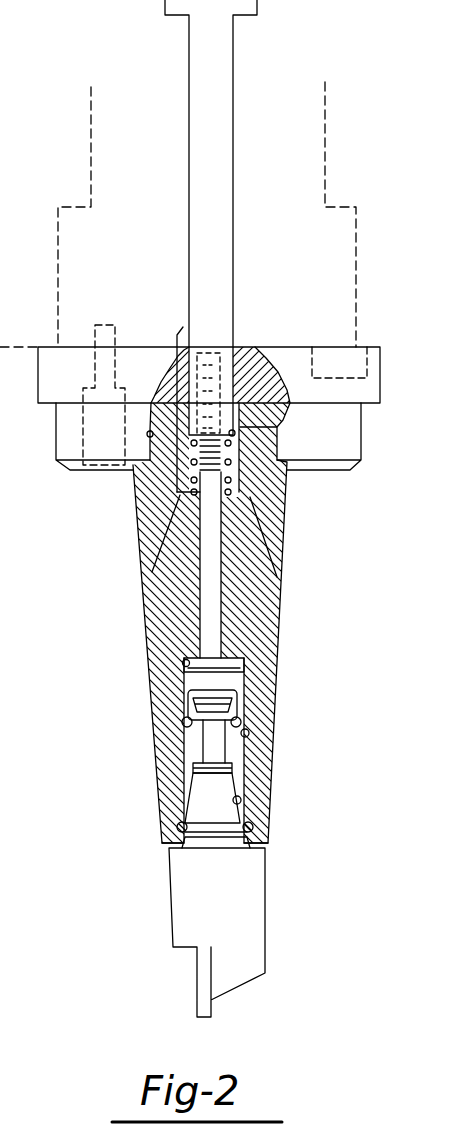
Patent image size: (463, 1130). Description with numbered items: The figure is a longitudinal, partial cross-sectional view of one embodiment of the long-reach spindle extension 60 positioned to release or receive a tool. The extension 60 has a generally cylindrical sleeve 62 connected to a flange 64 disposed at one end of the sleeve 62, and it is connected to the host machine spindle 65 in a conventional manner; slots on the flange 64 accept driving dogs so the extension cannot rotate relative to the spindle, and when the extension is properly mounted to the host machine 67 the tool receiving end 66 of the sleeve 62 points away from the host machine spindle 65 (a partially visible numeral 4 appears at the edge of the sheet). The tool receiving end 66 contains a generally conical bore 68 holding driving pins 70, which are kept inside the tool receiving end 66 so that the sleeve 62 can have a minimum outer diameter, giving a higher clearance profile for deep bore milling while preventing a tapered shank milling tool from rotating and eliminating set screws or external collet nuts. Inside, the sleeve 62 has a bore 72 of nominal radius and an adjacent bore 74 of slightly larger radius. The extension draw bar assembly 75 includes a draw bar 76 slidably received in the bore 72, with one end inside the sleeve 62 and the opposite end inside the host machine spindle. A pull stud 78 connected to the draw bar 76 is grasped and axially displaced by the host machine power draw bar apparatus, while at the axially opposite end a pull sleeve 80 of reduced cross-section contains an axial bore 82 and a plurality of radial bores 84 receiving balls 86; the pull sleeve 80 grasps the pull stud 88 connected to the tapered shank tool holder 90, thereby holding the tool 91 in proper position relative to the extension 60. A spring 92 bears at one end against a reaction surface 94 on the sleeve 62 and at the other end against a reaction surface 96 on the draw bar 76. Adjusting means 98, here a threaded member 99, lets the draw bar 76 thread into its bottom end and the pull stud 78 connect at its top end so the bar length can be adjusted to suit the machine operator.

The mounting plate centerline 4 is at (19, 328).
The long-reach spindle extension 60 is at (112, 668).
The sleeve 62 is at (278, 581).
The flange 64 is at (383, 376).
The host machine spindle 65 is at (290, 124).
The tool receiving end 66 is at (280, 860).
The host machine 67 is at (30, 352).
The conical bore 68 is at (242, 800).
The driving pins 70 is at (250, 830).
The bore 72 is at (238, 660).
The adjacent bore 74 is at (248, 736).
The extension draw bar assembly 75 is at (188, 616).
The draw bar 76 is at (213, 612).
The pull stud 78 is at (233, 52).
The pull sleeve 80 is at (230, 680).
The axial bore 82 is at (183, 665).
The radial bores 84 is at (184, 724).
The balls 86 is at (213, 755).
The pull stud 88 is at (197, 757).
The tapered shank tool holder 90 is at (232, 811).
The tool 91 is at (185, 862).
The spring 92 is at (230, 494).
The reaction surface 94 is at (163, 503).
The reaction surface 96 is at (232, 433).
The adjusting means 98 is at (150, 434).
The threaded member 99 is at (220, 353).